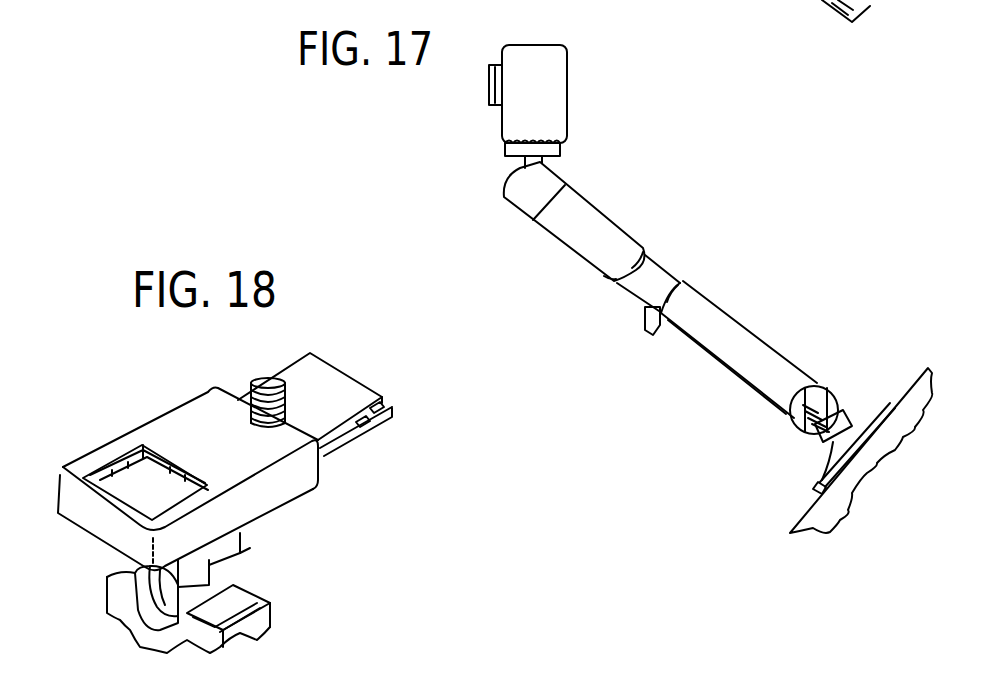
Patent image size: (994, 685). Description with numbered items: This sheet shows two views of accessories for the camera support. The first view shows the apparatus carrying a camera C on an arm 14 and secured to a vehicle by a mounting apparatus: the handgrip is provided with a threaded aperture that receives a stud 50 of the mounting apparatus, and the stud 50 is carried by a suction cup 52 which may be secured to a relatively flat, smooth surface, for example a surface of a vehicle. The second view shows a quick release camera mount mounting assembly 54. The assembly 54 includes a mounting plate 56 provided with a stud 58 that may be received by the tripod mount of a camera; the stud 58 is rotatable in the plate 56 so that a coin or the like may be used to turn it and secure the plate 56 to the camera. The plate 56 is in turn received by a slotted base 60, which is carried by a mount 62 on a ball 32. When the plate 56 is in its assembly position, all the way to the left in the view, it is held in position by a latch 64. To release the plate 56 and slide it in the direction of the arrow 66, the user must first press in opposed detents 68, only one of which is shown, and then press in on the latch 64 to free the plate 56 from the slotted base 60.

In FIG. 17, the camera C is at (584, 90).
In FIG. 17, the arm 14 is at (692, 352).
In FIG. 17, the stud 50 is at (797, 422).
In FIG. 17, the suction cup 52 is at (866, 418).
In FIG. 18, the quick release camera mount mounting assembly 54 is at (84, 547).
In FIG. 18, the mounting plate 56 is at (316, 370).
In FIG. 18, the stud 58 is at (276, 376).
In FIG. 18, the slotted base 60 is at (300, 477).
In FIG. 18, the mount 62 is at (240, 537).
In FIG. 18, the latch 64 is at (130, 573).
In FIG. 18, the arrow 66 is at (358, 373).
In FIG. 18, the opposed detents 68 is at (220, 553).
In FIG. 18, the ball 32 is at (152, 637).